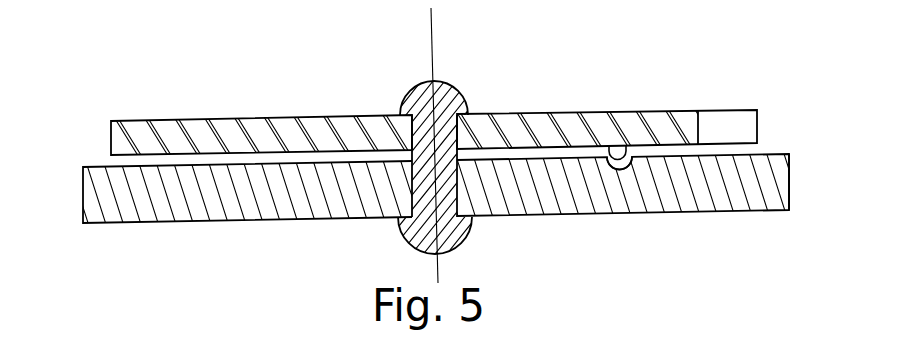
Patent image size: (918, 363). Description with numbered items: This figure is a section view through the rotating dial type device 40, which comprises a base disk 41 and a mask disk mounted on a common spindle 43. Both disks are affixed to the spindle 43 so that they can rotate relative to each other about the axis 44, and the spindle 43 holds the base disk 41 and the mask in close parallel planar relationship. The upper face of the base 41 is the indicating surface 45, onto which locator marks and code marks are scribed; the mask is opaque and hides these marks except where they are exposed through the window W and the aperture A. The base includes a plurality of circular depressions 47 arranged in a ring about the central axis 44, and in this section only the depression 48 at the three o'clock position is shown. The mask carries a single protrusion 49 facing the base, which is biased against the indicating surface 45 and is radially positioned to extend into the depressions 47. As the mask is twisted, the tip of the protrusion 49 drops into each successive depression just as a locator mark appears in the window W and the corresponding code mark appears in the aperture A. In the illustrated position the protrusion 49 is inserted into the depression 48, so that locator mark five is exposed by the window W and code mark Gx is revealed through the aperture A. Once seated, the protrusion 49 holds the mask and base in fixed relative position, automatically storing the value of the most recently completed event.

The device 40 is at (275, 103).
The base disk 41 is at (83, 197).
The spindle 43 is at (447, 82).
The axis 44 is at (432, 44).
The indicating surface 45 is at (769, 154).
The circular depressions 47 is at (630, 167).
The depression 48 is at (608, 161).
The protrusion 49 is at (609, 150).
The aperture A is at (527, 122).
The window W is at (725, 123).